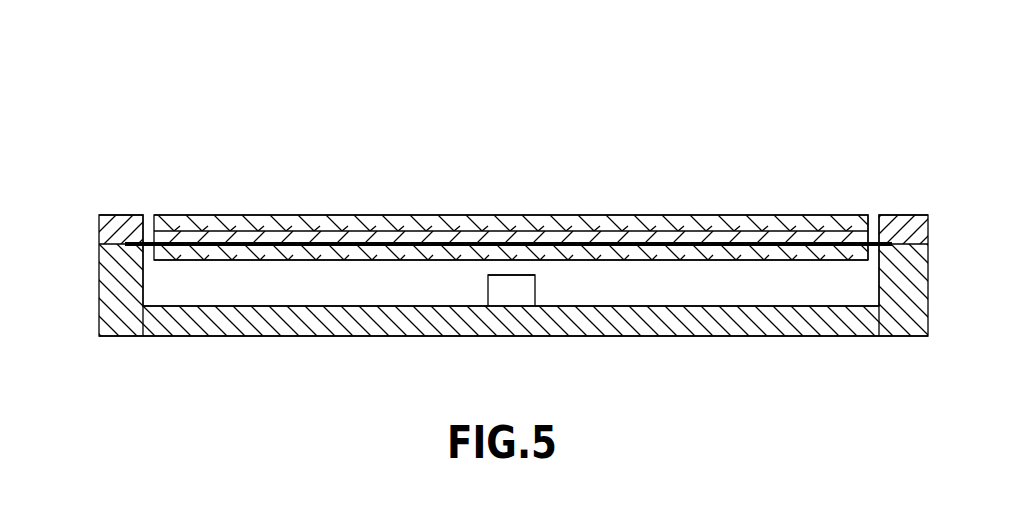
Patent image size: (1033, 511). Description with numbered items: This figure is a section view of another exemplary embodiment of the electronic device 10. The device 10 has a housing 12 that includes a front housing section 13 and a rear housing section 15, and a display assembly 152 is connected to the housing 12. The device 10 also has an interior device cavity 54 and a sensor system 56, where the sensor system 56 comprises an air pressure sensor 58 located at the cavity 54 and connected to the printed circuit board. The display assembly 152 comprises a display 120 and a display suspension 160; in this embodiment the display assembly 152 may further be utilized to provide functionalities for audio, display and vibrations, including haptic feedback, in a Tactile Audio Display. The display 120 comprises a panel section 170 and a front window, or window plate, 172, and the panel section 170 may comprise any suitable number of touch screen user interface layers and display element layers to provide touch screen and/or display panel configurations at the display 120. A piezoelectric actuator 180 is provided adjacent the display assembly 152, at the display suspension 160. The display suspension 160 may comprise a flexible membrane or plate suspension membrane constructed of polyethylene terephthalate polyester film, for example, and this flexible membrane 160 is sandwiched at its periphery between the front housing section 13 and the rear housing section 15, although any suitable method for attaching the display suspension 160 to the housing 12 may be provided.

The device 10 is at (798, 71).
The housing 12 is at (99, 245).
The front housing section 13 is at (113, 223).
The rear housing section 15 is at (915, 337).
The interior device cavity 54 is at (325, 282).
The sensor system 56 is at (534, 275).
The air pressure sensor 58 is at (498, 293).
The display 120 is at (479, 214).
The display assembly 152 is at (624, 159).
The display suspension 160 is at (122, 255).
The panel section 170 is at (848, 240).
The front window 172 is at (752, 226).
The piezoelectric actuator 180 is at (777, 253).